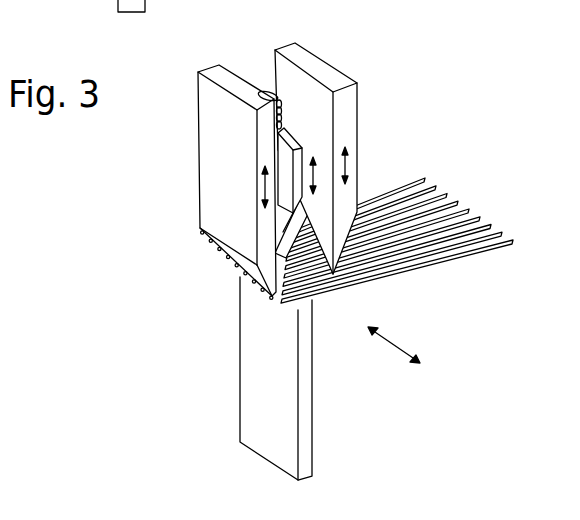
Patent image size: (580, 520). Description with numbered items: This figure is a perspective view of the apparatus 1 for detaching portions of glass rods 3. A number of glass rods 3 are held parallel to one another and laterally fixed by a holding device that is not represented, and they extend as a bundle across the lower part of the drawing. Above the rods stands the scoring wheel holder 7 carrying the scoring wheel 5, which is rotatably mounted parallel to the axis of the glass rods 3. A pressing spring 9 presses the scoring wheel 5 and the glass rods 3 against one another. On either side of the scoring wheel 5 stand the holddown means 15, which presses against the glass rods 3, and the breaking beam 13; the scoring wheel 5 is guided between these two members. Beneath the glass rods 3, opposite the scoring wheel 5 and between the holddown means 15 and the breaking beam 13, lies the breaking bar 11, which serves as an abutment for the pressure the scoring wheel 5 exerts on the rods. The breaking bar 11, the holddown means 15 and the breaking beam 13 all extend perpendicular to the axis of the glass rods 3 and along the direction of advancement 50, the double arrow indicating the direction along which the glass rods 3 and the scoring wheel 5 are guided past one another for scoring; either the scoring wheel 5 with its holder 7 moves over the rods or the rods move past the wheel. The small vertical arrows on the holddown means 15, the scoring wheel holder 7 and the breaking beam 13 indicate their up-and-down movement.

The apparatus 1 is at (141, 260).
The glass rods 3 is at (490, 258).
The scoring wheel 5 is at (268, 226).
The scoring wheel holder 7 is at (308, 220).
The pressing spring 9 is at (273, 93).
The breaking bar 11 is at (240, 359).
The breaking beam 13 is at (357, 97).
The holddown means 15 is at (198, 157).
The direction of advancement 50 is at (398, 348).